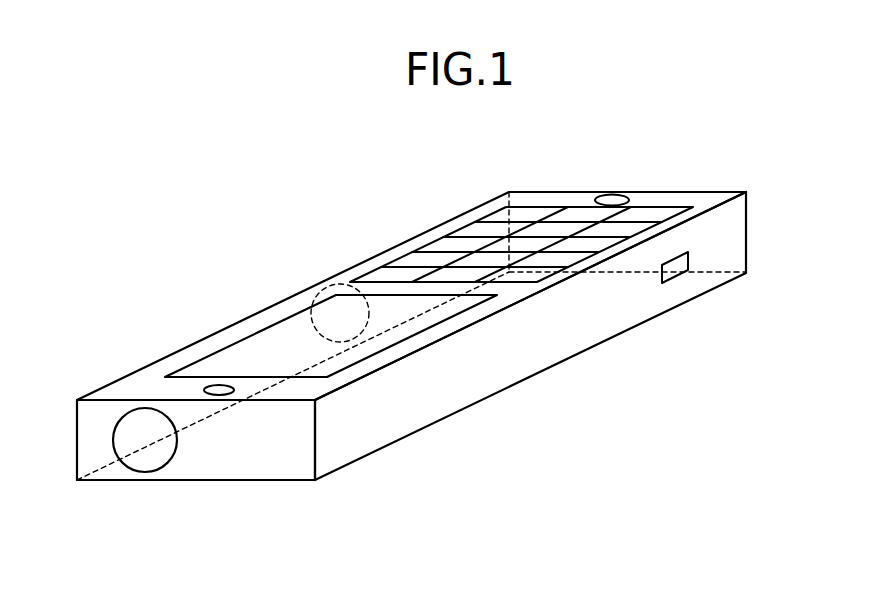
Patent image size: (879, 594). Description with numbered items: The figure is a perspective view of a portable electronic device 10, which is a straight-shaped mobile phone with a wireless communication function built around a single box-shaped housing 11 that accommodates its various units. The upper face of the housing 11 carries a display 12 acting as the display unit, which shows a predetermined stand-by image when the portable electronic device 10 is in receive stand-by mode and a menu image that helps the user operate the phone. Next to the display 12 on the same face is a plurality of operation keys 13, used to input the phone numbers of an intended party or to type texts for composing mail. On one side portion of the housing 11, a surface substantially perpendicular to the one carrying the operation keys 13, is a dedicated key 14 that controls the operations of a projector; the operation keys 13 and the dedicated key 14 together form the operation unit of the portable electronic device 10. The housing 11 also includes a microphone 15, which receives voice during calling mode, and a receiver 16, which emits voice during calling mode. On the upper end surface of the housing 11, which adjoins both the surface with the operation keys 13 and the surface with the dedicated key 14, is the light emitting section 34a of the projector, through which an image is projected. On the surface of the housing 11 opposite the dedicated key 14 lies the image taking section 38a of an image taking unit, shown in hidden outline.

The portable electronic device 10 is at (252, 204).
The housing 11 is at (553, 348).
The display 12 is at (257, 355).
The operation keys 13 is at (643, 215).
The dedicated key 14 is at (680, 264).
The microphone 15 is at (610, 195).
The receiver 16 is at (218, 385).
The light emitting section 34a is at (150, 460).
The image taking section 38a is at (330, 285).